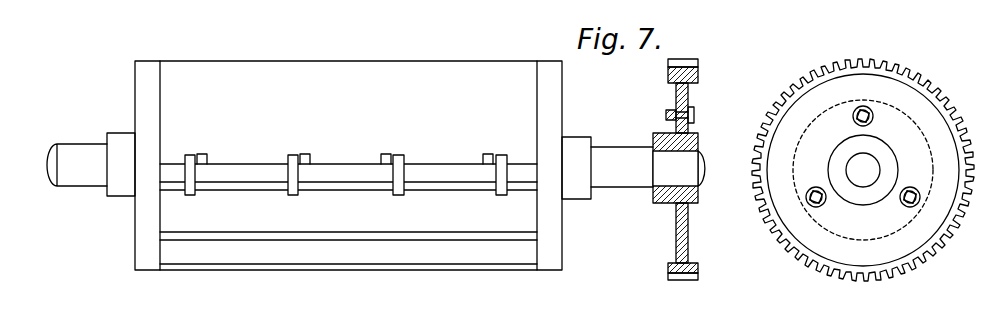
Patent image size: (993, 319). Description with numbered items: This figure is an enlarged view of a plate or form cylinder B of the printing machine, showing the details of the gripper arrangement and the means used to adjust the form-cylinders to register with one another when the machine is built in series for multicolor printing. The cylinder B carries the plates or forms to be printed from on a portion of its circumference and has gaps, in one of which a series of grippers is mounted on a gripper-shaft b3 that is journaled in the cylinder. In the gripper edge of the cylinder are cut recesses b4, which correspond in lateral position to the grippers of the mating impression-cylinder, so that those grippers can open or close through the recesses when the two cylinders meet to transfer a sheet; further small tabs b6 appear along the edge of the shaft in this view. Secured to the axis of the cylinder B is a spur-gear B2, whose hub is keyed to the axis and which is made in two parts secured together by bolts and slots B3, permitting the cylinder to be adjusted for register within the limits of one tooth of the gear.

The plate or form cylinder B is at (350, 165).
The gripper-shaft b3 is at (336, 188).
The recesses b4 is at (189, 162).
The tabs b6 is at (206, 160).
The spur-gear B2 is at (696, 73).
The bolts and slots B3 is at (699, 115).